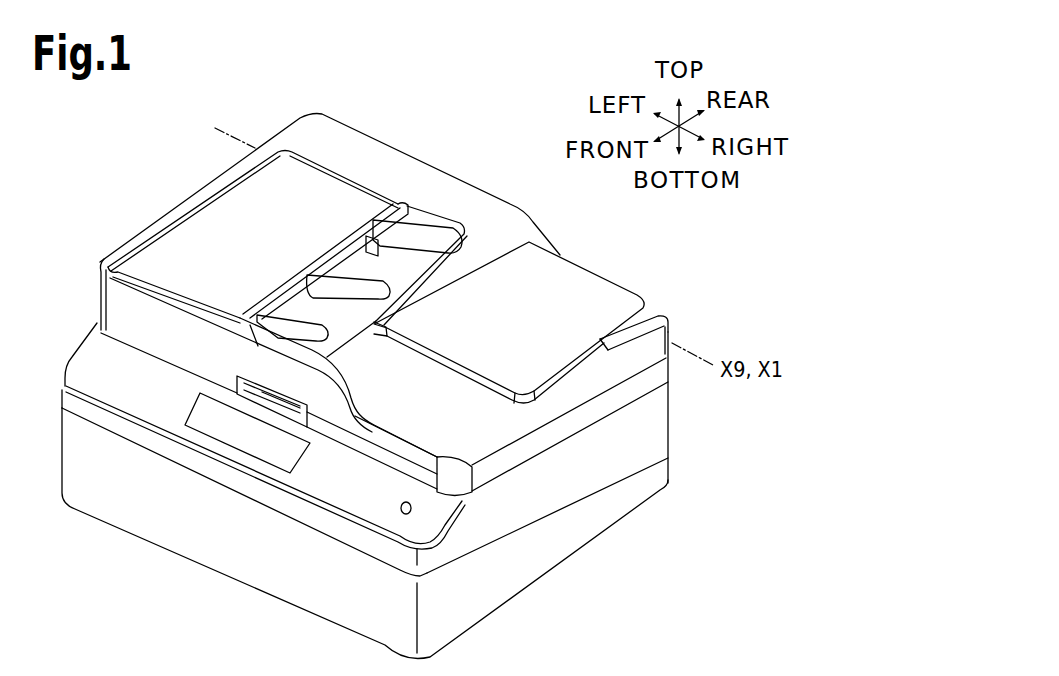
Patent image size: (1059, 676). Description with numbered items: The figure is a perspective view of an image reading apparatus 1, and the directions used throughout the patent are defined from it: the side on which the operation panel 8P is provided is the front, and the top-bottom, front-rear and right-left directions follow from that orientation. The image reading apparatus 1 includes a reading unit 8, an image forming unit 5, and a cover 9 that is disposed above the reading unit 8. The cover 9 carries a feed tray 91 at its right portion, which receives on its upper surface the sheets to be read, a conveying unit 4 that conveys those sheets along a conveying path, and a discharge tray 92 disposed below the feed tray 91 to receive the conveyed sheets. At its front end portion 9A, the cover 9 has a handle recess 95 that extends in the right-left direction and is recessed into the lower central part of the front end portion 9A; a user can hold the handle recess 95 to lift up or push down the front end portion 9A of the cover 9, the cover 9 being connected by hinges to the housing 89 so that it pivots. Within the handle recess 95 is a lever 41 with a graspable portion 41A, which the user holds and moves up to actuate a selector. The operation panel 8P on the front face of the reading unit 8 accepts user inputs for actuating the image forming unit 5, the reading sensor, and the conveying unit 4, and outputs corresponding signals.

The image reading apparatus 1 is at (477, 133).
The conveying unit 4 is at (227, 231).
The image forming unit 5 is at (58, 449).
The reading unit 8 is at (58, 393).
The operation panel 8P is at (230, 422).
The cover 9 is at (161, 213).
The front end portion 9A is at (190, 367).
The lever 41 is at (268, 382).
The graspable portion 41A is at (234, 385).
The housing 89 is at (620, 410).
The feed tray 91 is at (568, 286).
The discharge tray 92 is at (448, 414).
The handle recess 95 is at (293, 408).